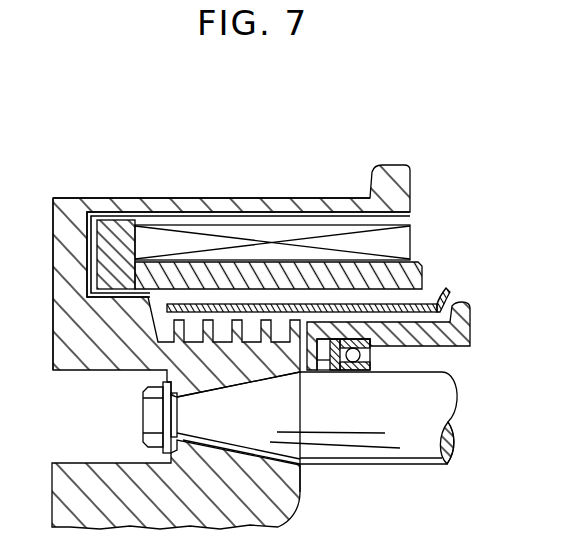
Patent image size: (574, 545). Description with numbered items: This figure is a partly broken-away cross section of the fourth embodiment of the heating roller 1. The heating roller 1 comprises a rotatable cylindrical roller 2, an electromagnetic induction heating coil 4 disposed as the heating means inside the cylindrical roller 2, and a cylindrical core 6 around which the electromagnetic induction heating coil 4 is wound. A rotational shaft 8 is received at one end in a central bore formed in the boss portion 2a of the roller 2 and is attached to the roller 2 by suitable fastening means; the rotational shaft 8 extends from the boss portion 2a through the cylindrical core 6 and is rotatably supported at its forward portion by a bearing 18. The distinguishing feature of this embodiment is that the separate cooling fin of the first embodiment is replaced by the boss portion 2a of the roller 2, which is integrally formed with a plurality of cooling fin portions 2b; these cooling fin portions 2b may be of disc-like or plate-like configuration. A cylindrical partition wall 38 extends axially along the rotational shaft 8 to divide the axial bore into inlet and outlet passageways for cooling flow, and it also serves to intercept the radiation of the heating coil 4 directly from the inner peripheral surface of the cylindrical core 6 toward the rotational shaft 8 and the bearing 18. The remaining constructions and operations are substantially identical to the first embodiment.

The heating roller 1 is at (211, 196).
The rotatable cylindrical roller 2 is at (254, 197).
The boss portion 2a is at (60, 330).
The cooling fin portions 2b is at (207, 318).
The electromagnetic induction heating coil 4 is at (298, 230).
The cylindrical core 6 is at (174, 271).
The rotational shaft 8 is at (246, 440).
The bearing 18 is at (372, 366).
The cylindrical partition wall 38 is at (431, 292).